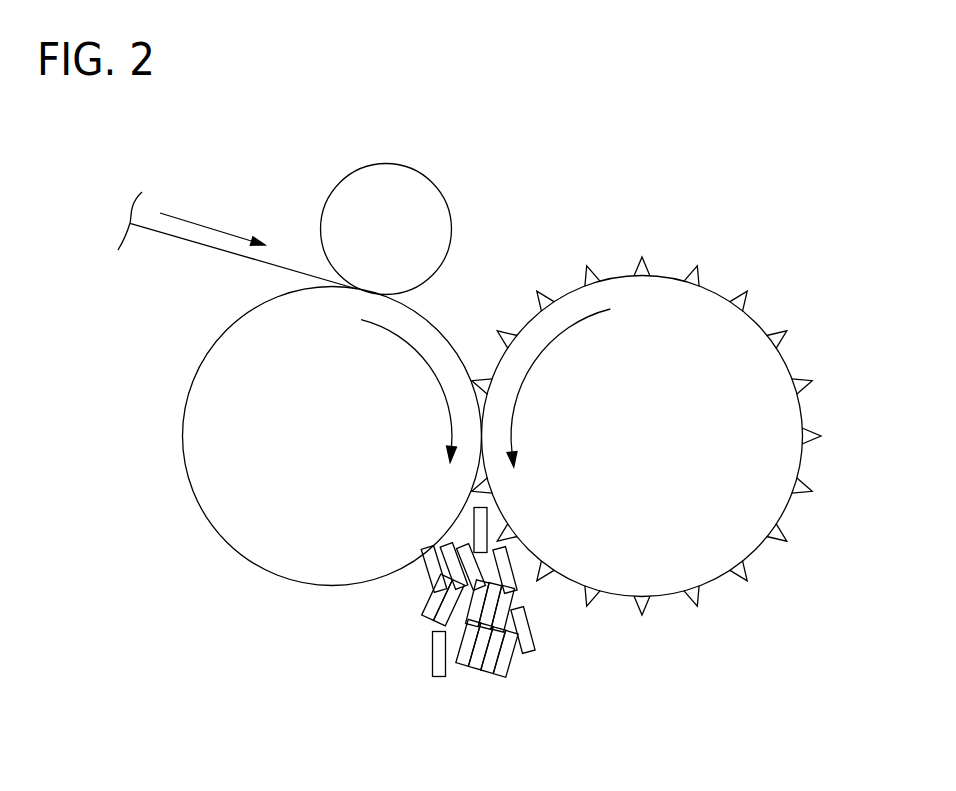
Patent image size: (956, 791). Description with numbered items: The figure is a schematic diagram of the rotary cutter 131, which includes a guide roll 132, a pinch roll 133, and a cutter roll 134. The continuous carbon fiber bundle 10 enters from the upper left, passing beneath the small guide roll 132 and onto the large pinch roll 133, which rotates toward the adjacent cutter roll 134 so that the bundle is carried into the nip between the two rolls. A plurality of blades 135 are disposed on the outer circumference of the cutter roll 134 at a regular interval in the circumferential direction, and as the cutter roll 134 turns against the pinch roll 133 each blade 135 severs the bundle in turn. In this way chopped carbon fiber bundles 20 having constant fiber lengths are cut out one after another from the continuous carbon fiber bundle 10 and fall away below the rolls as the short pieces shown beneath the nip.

The continuous carbon fiber bundle 10 is at (163, 232).
The chopped carbon fiber bundles 20 is at (432, 655).
The rotary cutter 131 is at (742, 142).
The guide roll 132 is at (388, 163).
The pinch roll 133 is at (183, 431).
The cutter roll 134 is at (715, 290).
The blades 135 is at (641, 258).